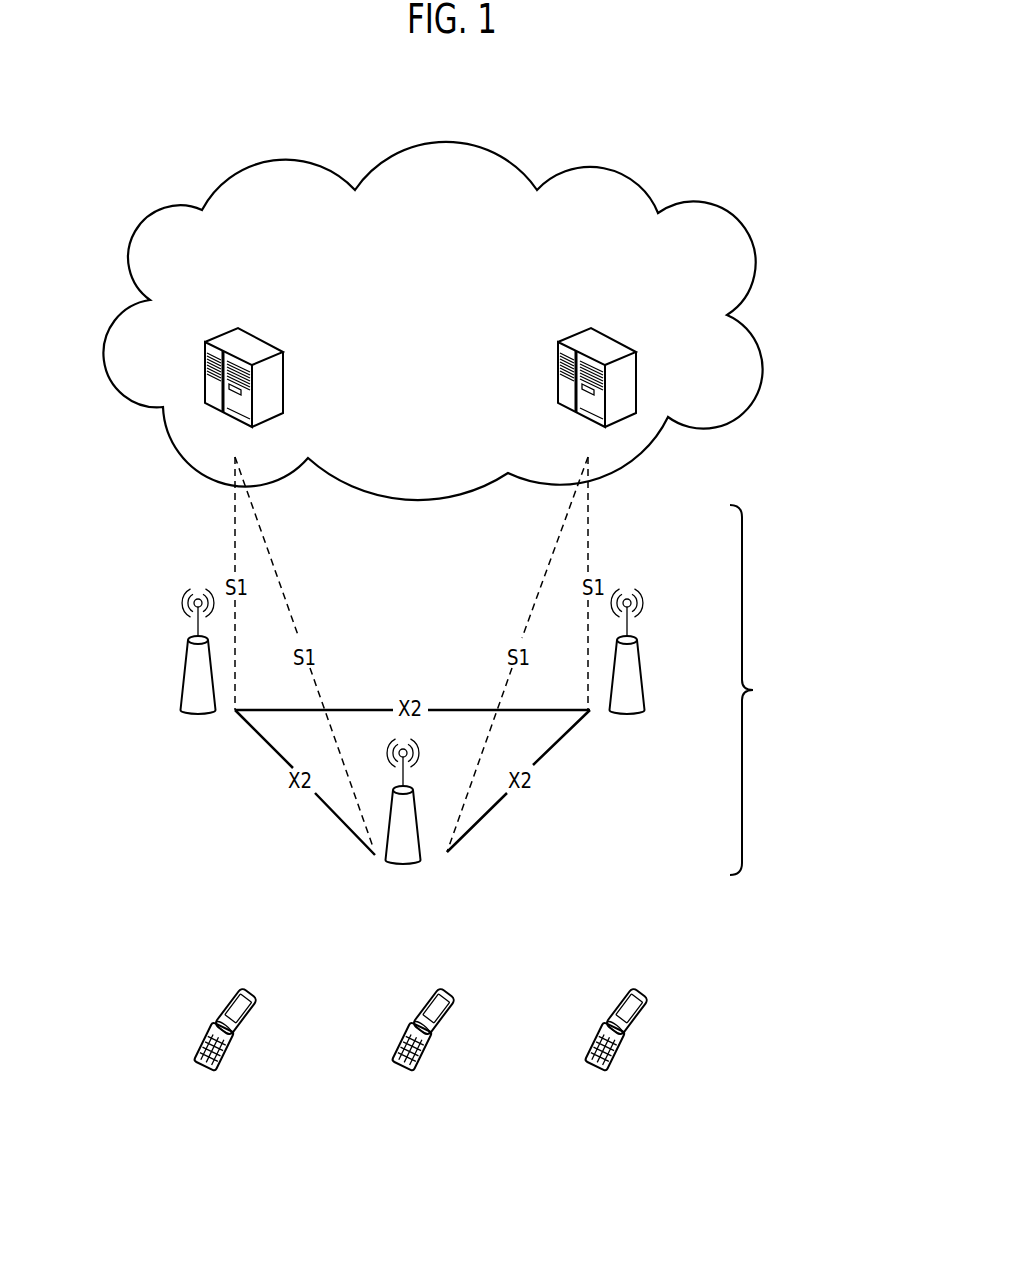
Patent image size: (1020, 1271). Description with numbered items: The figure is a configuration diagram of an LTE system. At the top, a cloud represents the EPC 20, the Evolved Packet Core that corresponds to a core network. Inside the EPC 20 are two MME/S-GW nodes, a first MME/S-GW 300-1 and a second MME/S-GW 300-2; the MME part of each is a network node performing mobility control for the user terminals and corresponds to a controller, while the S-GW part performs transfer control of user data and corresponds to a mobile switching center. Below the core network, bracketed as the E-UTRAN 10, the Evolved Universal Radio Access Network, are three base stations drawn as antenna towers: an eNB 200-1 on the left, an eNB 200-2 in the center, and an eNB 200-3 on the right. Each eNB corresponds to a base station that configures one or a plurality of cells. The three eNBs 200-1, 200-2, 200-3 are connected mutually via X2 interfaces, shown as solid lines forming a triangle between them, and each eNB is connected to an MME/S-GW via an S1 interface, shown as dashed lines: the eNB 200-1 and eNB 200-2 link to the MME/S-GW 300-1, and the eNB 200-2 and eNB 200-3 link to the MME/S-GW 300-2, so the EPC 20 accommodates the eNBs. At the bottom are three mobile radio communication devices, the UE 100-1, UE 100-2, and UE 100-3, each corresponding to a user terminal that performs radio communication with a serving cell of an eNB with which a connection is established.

The E-UTRAN 10 is at (790, 690).
The EPC 20 is at (637, 181).
The UE 100-1 is at (243, 998).
The UE 100-2 is at (441, 998).
The UE 100-3 is at (634, 998).
The eNB 200-1 is at (184, 675).
The eNB 200-2 is at (419, 835).
The eNB 200-3 is at (639, 660).
The MME/S-GW 300-1 is at (265, 340).
The MME/S-GW 300-2 is at (613, 340).